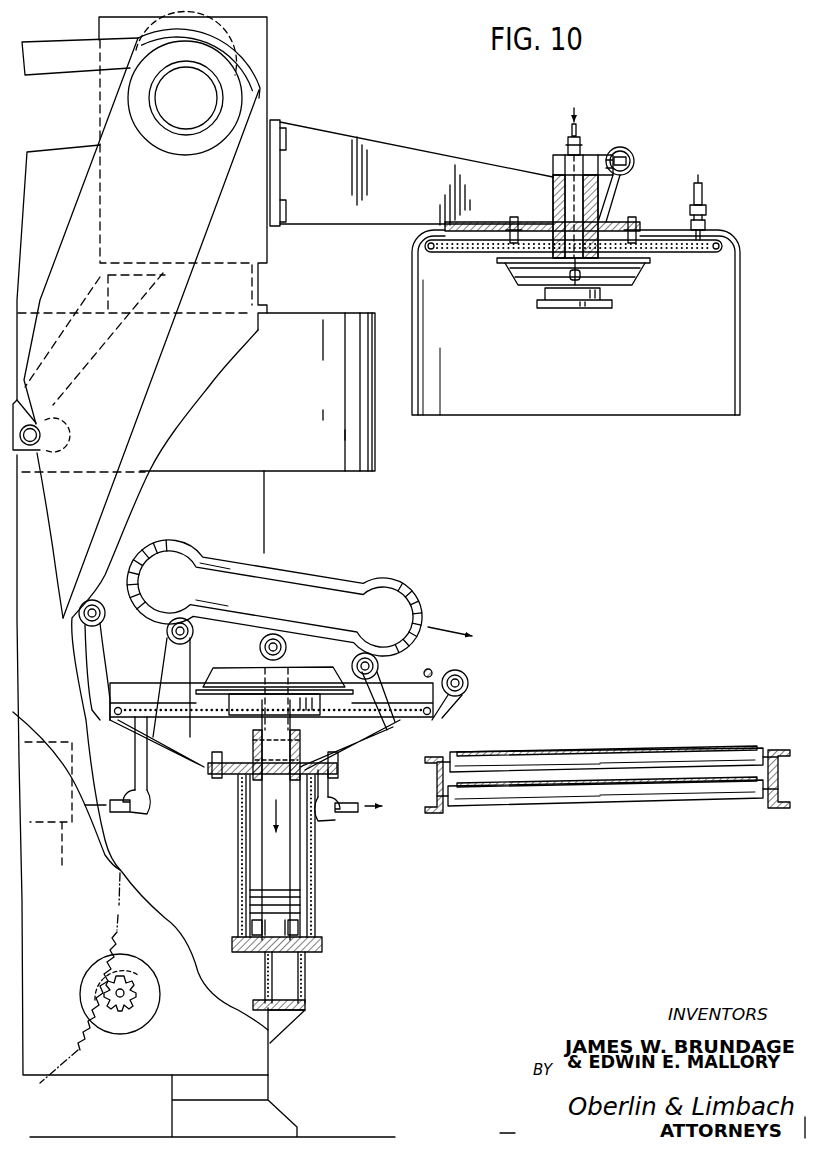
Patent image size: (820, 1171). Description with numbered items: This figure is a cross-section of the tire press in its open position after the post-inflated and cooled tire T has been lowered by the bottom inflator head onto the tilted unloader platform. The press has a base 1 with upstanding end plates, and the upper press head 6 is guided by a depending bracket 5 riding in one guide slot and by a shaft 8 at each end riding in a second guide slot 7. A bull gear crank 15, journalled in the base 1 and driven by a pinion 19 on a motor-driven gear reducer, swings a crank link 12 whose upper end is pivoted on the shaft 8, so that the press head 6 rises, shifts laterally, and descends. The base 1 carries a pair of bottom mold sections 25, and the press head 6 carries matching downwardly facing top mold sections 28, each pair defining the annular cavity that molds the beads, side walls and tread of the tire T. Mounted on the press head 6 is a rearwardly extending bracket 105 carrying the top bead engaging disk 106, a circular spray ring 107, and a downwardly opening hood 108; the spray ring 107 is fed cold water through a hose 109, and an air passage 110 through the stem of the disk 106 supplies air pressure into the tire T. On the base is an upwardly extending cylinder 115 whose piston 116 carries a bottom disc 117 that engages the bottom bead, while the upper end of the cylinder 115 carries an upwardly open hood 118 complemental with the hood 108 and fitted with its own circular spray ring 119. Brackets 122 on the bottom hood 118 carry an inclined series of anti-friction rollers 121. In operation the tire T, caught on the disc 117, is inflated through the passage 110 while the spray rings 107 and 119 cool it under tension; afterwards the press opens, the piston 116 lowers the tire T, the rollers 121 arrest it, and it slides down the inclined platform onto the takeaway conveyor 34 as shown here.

The base 1 is at (103, 1068).
The depending bracket 5 is at (100, 336).
The upper press head 6 is at (271, 59).
The second guide slot 7 is at (50, 162).
The shaft 8 is at (190, 122).
The crank link 12 is at (207, 208).
The bull gear crank 15 is at (122, 945).
The pinion 19 is at (133, 1007).
The bottom mold section 25 is at (50, 818).
The top mold section 28 is at (337, 463).
The takeaway conveyor 34 is at (588, 806).
The rearwardly extending bracket 105 is at (400, 155).
The top bead engaging disk 106 is at (630, 268).
The circular spray ring 107 is at (470, 253).
The downwardly opening hood 108 is at (733, 347).
The hose 109 is at (703, 192).
The air passage 110 is at (577, 287).
The cylinder 115 is at (312, 856).
The piston 116 is at (295, 905).
The bottom disc 117 is at (233, 673).
The upwardly open hood 118 is at (404, 718).
The circular spray ring 119 is at (343, 713).
The rollers 121 is at (104, 616).
The brackets 122 is at (90, 670).
The tire T is at (411, 589).